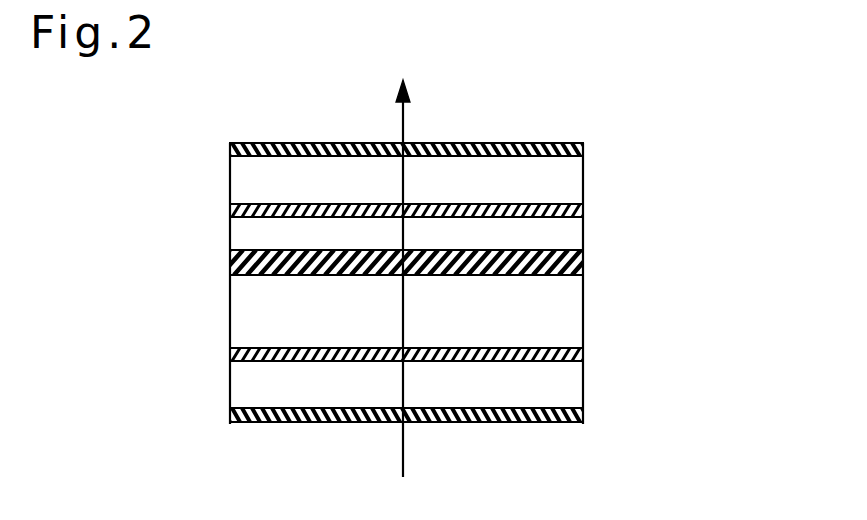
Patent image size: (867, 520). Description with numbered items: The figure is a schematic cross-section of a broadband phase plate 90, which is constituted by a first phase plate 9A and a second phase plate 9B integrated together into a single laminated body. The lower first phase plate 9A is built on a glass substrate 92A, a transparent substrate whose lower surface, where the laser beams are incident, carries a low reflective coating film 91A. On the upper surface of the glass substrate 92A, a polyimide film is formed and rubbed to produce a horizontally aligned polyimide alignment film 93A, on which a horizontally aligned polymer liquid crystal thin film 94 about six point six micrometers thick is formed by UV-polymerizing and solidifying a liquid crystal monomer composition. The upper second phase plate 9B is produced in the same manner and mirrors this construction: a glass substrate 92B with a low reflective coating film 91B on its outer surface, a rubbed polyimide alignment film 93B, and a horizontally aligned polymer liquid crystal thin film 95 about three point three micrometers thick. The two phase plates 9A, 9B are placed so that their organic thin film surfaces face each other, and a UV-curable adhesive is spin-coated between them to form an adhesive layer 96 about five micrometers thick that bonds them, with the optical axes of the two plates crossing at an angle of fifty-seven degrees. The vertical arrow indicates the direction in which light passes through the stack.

The broadband phase plate 90 is at (148, 173).
The second phase plate 9B is at (217, 143).
The first phase plate 9A is at (218, 278).
The low reflective coating film 91B is at (559, 143).
The glass substrate 92B is at (560, 180).
The polyimide alignment film 93B is at (563, 212).
The polymer liquid crystal thin film 95 is at (553, 238).
The adhesive layer 96 is at (583, 265).
The polymer liquid crystal thin film 94 is at (553, 332).
The polyimide alignment film 93A is at (553, 352).
The glass substrate 92A is at (557, 385).
The low reflective coating film 91A is at (562, 423).